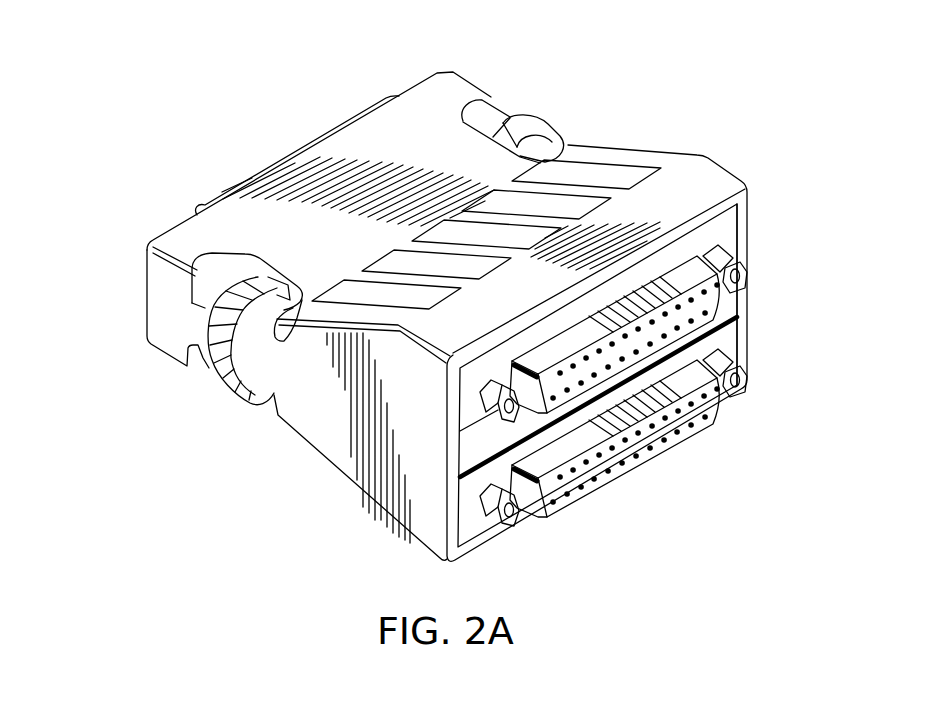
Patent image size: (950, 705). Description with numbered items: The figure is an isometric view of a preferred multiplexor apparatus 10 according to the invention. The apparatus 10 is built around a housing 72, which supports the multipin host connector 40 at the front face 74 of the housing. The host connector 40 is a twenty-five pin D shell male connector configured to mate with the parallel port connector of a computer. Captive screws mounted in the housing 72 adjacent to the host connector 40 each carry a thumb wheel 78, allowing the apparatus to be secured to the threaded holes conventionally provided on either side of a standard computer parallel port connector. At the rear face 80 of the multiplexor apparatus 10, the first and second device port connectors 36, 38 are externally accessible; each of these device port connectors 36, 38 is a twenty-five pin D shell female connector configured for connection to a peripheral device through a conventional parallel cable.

The multiplexor apparatus 10 is at (618, 112).
The first device port connector 36 is at (713, 307).
The second device port connector 38 is at (698, 426).
The multipin host connector 40 is at (282, 156).
The housing 72 is at (693, 183).
The front face 74 is at (143, 277).
The thumb wheel 78 is at (507, 120).
The rear face 80 is at (749, 235).